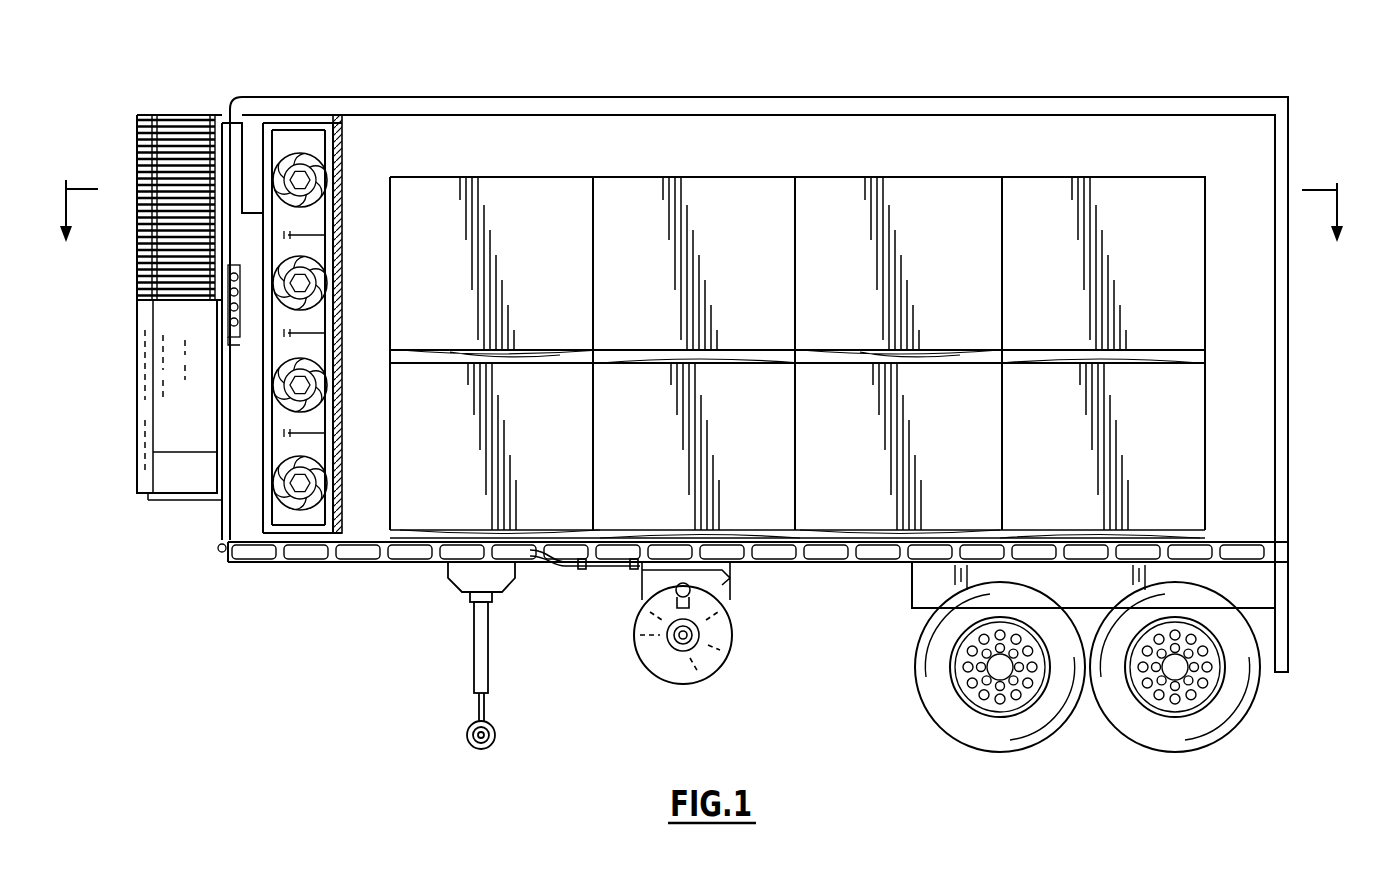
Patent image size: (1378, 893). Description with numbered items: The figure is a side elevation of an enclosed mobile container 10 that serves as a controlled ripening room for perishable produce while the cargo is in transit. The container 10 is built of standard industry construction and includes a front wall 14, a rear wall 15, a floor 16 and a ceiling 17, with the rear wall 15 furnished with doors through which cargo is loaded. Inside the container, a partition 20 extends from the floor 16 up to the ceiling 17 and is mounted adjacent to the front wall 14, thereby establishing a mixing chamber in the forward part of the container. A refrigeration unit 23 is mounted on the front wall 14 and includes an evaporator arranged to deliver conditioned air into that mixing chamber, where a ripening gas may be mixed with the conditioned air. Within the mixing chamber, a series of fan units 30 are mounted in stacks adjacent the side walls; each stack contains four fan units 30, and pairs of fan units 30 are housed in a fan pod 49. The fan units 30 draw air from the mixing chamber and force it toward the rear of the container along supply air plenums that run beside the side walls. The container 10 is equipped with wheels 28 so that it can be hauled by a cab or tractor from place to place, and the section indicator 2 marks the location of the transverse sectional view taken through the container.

The mobile container 10 is at (970, 77).
The front wall 14 is at (270, 515).
The rear wall 15 is at (1290, 318).
The floor 16 is at (876, 562).
The ceiling 17 is at (690, 97).
The partition 20 is at (342, 150).
The refrigeration unit 23 is at (118, 352).
The wheels 28 is at (915, 658).
The fan units 30 is at (336, 256).
The fan pod 49 is at (350, 307).
The section line 2- 2 is at (701, 229).